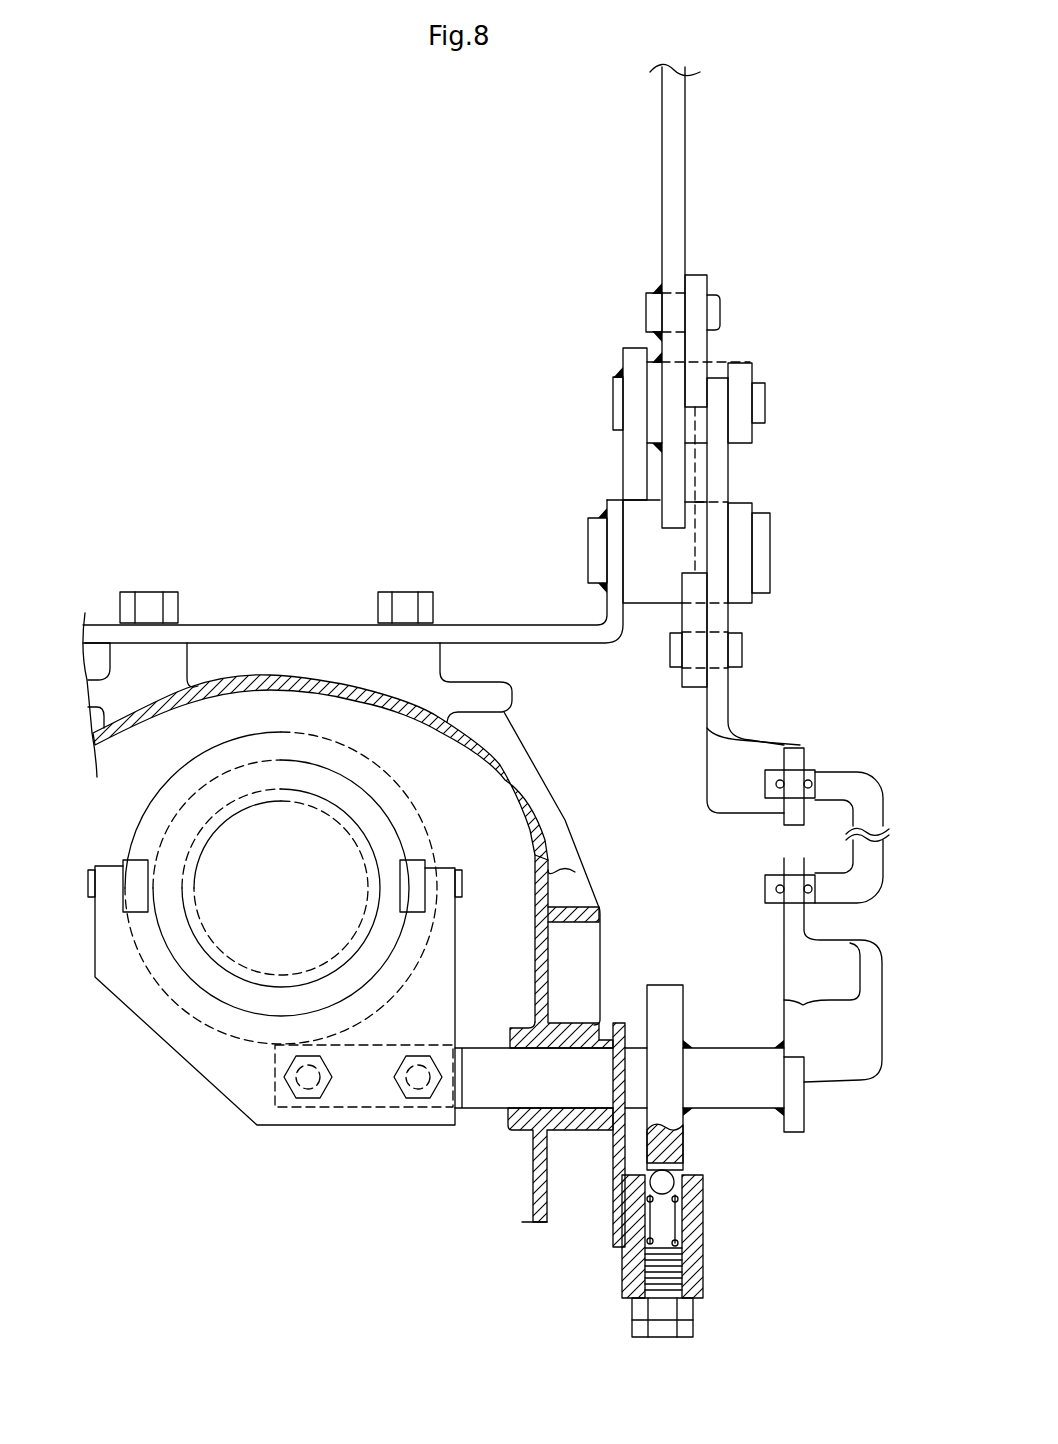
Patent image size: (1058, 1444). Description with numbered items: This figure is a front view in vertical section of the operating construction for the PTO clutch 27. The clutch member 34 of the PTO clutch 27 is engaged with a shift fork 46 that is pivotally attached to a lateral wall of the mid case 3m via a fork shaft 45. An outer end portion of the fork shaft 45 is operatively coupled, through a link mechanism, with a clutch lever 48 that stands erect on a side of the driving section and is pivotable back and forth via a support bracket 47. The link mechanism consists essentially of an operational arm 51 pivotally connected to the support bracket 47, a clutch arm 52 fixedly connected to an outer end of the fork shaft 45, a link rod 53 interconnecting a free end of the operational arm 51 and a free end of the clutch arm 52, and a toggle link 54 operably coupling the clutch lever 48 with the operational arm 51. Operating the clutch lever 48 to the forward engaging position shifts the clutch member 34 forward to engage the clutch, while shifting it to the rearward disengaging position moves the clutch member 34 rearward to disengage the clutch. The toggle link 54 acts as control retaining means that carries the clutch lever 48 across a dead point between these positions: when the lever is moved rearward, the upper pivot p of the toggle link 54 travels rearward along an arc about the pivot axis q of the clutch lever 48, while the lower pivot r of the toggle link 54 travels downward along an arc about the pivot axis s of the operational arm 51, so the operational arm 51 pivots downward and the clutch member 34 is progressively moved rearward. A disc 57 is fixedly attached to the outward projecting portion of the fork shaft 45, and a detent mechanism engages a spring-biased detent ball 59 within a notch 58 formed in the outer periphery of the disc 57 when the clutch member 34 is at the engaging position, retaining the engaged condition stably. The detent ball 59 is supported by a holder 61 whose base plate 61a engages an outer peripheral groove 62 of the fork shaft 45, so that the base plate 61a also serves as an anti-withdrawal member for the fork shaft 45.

The clutch lever 48 is at (685, 113).
The toggle link 54 is at (709, 284).
The upper pivot p is at (700, 313).
The pivot axis s is at (752, 403).
The pivot axis q is at (752, 552).
The lower pivot r is at (728, 652).
The operational arm 51 is at (728, 700).
The link rod 53 is at (840, 775).
The clutch arm 52 is at (848, 1078).
The support bracket 47 is at (508, 624).
The mid case 3m is at (578, 870).
The PTO clutch 27 is at (410, 814).
The clutch member 34 is at (132, 828).
The shift fork 46 is at (192, 1055).
The fork shaft 45 is at (478, 1108).
The outer peripheral groove 62 is at (614, 1078).
The base plate 61a is at (612, 1157).
The disc 57 is at (666, 986).
The holder 61 is at (703, 1267).
The notch 58 is at (684, 1170).
The detent ball 59 is at (702, 1217).